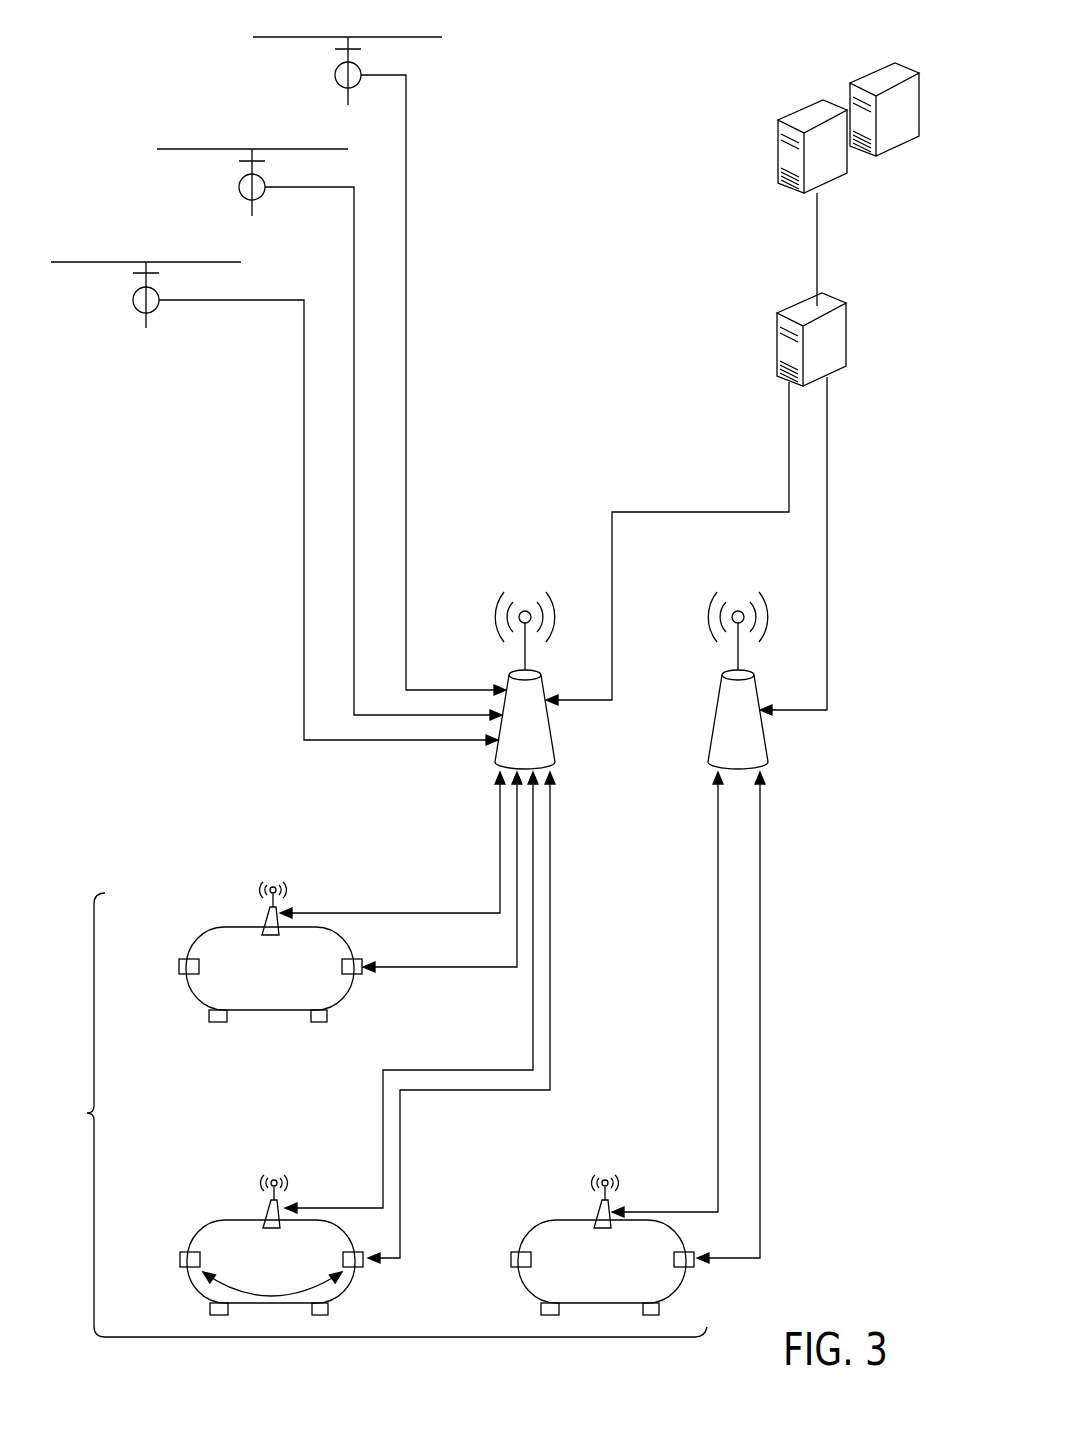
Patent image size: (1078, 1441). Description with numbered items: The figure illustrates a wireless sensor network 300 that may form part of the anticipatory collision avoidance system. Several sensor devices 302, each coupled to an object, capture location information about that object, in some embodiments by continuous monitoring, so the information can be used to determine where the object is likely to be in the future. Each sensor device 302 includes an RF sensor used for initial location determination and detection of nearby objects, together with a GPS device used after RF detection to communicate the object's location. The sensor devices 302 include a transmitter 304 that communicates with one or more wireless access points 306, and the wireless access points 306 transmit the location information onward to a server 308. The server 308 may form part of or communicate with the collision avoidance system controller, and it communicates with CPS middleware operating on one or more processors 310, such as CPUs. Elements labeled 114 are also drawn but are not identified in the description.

The substation / power source 114 is at (292, 36).
The wireless sensor network 300 is at (378, 1115).
The sensor device 302 is at (253, 1036).
The transmitter 304 is at (265, 915).
The wireless access point 306 is at (552, 732).
The server 308 is at (837, 338).
The processor 310 is at (889, 47).